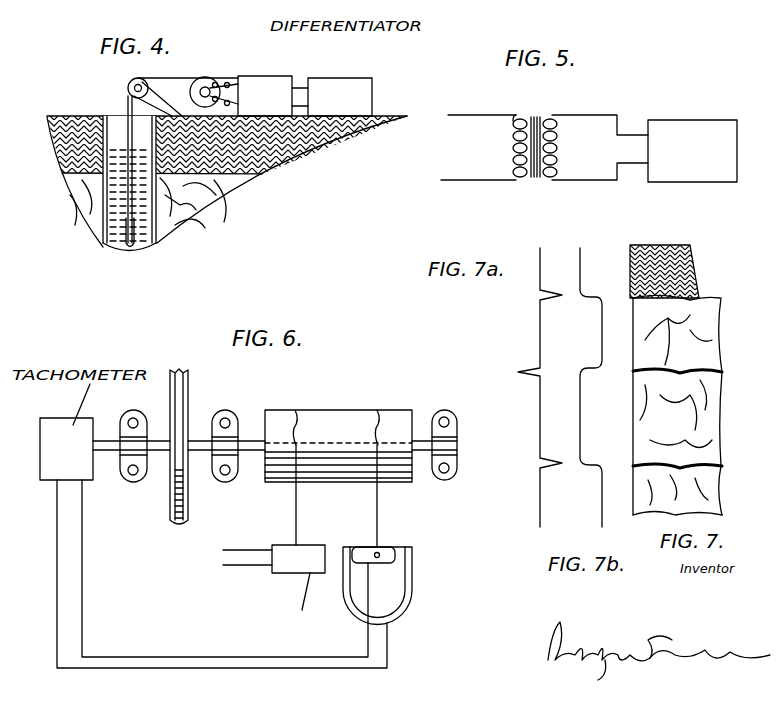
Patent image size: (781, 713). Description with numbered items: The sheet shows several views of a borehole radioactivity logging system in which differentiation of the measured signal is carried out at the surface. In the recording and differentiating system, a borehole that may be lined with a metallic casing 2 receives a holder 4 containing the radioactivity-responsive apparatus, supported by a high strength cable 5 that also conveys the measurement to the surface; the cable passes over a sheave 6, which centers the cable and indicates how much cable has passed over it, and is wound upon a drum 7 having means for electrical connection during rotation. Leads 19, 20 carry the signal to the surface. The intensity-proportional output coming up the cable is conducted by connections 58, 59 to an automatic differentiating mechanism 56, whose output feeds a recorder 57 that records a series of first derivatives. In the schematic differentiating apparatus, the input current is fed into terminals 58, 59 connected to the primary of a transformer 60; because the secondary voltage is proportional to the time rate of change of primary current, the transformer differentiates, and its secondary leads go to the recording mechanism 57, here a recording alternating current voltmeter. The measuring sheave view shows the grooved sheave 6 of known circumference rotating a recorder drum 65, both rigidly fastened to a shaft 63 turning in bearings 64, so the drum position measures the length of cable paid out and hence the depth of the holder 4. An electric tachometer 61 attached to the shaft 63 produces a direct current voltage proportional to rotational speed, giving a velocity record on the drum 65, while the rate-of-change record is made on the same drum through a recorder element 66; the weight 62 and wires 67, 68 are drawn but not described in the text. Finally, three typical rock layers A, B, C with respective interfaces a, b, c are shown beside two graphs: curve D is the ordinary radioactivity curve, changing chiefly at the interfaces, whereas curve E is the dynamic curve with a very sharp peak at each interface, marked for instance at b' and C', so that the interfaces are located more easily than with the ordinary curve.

In FIG. 4, the metallic casing 2 is at (102, 245).
In FIG. 4, the holder 4 is at (132, 248).
In FIG. 4, the high strength cable 5 is at (123, 107).
In FIG. 4, the sheave 6 is at (129, 88).
In FIG. 6, the sheave 6 is at (187, 508).
In FIG. 4, the drum 7 is at (204, 78).
In FIG. 4, the automatic differentiating mechanism 56 is at (257, 82).
In FIG. 4, the recorder 57 is at (328, 82).
In FIG. 5, the recorder 57 is at (680, 130).
In FIG. 4, the connection 58 is at (228, 83).
In FIG. 5, the connection 58 is at (461, 113).
In FIG. 4, the connection 59 is at (229, 106).
In FIG. 5, the connection 59 is at (456, 186).
In FIG. 5, the transformer 60 is at (530, 186).
In FIG. 6, the electric tachometer 61 is at (58, 428).
In FIG. 6, the weight 62 is at (413, 572).
In FIG. 6, the shaft 63 is at (165, 455).
In FIG. 6, the bearing 64 is at (127, 437).
In FIG. 6, the recorder drum 65 is at (368, 413).
In FIG. 6, the recorder element 66 is at (293, 573).
In FIG. 6, the wire 67 is at (117, 656).
In FIG. 6, the wire 68 is at (56, 603).
In FIG. 6, the lead 19 is at (250, 543).
In FIG. 6, the lead 20 is at (233, 567).
In FIG. 7A, the dynamic curve E is at (540, 387).
In FIG. 7B, the ordinary curve of radioactivity D is at (591, 387).
In FIG. 7, the rock layer A is at (688, 246).
In FIG. 7, the rock layer B is at (683, 333).
In FIG. 7, the rock layer C is at (693, 414).
In FIG. 7A, the interface a is at (556, 302).
In FIG. 7B, the interface a is at (593, 297).
In FIG. 7, the interface a is at (703, 293).
In FIG. 7B, the interface b is at (598, 386).
In FIG. 7, the interface b is at (695, 366).
In FIG. 7B, the interface c is at (590, 462).
In FIG. 7, the interface c is at (723, 472).
In FIG. 7A, the trace deflection b' is at (501, 369).
In FIG. 7A, the trace deflection C' is at (520, 482).